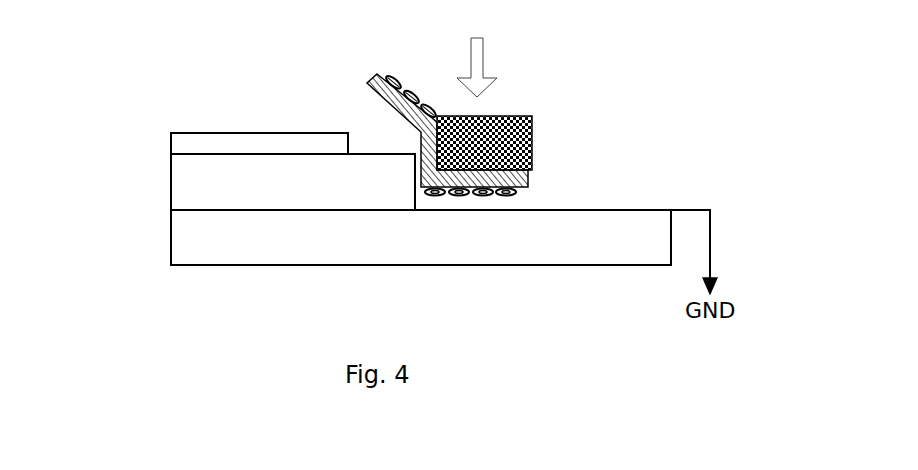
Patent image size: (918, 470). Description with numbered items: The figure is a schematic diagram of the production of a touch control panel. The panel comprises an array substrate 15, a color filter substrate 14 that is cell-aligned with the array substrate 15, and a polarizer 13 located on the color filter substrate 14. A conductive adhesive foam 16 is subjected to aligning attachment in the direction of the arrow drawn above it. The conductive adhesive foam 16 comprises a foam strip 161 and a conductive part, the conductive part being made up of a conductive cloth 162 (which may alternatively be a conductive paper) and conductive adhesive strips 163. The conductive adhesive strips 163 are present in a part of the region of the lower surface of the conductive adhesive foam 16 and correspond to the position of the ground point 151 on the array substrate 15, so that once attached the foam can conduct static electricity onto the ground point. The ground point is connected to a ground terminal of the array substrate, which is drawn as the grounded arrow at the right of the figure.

The polarizer 13 is at (182, 143).
The color filter substrate 14 is at (182, 182).
The array substrate 15 is at (182, 237).
The ground point 151 is at (543, 253).
The conductive adhesive foam 16 is at (520, 136).
The foam strip 161 is at (532, 145).
The conductive cloth 162 is at (527, 182).
The conductive adhesive strip 163 is at (518, 187).